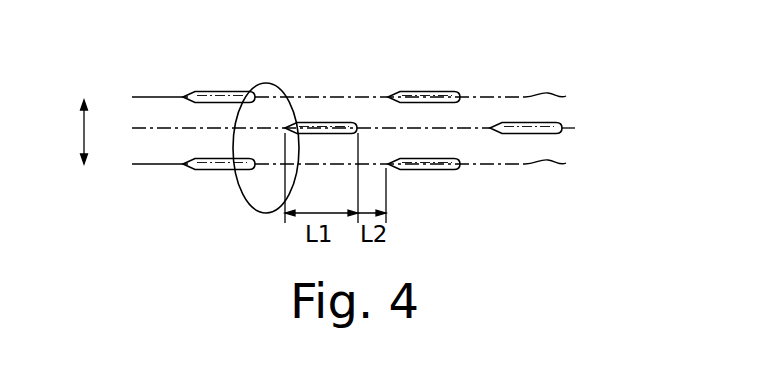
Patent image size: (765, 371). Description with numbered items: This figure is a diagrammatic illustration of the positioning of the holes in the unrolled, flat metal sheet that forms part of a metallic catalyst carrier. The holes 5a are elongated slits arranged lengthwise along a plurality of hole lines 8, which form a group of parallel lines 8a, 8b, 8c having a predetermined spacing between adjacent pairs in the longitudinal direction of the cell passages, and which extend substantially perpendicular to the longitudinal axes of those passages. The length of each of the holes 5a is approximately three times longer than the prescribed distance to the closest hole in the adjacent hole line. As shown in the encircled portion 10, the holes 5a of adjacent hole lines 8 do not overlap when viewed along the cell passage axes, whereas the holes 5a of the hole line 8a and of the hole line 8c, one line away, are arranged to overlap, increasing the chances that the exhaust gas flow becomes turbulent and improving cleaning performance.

The holes 5a is at (348, 118).
The hole lines 8 is at (415, 126).
The hole line 8a is at (370, 166).
The hole line 8b is at (575, 128).
The hole line 8c is at (370, 86).
The encircled portion 10 is at (299, 106).